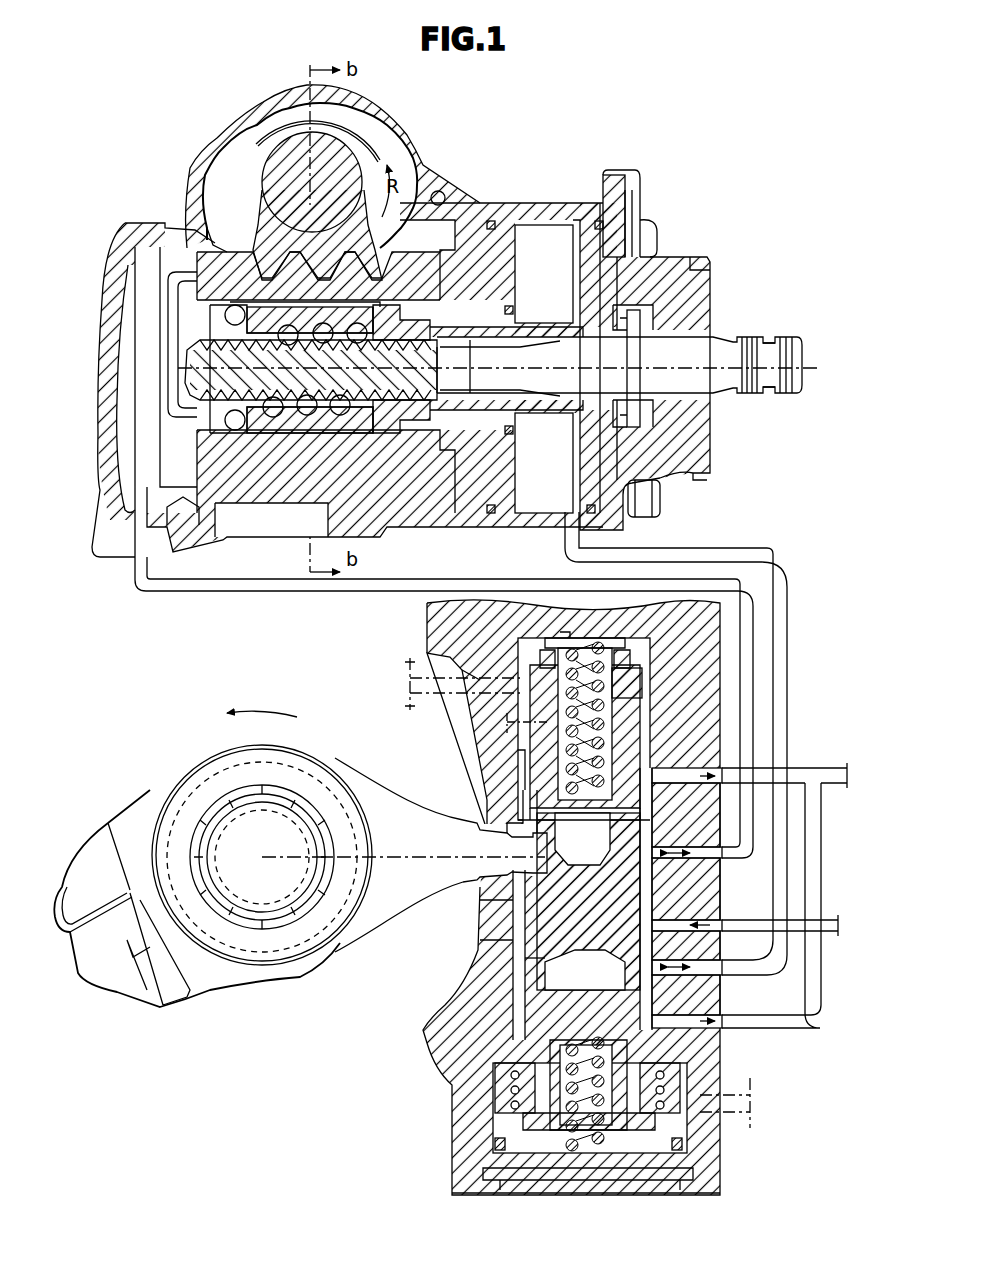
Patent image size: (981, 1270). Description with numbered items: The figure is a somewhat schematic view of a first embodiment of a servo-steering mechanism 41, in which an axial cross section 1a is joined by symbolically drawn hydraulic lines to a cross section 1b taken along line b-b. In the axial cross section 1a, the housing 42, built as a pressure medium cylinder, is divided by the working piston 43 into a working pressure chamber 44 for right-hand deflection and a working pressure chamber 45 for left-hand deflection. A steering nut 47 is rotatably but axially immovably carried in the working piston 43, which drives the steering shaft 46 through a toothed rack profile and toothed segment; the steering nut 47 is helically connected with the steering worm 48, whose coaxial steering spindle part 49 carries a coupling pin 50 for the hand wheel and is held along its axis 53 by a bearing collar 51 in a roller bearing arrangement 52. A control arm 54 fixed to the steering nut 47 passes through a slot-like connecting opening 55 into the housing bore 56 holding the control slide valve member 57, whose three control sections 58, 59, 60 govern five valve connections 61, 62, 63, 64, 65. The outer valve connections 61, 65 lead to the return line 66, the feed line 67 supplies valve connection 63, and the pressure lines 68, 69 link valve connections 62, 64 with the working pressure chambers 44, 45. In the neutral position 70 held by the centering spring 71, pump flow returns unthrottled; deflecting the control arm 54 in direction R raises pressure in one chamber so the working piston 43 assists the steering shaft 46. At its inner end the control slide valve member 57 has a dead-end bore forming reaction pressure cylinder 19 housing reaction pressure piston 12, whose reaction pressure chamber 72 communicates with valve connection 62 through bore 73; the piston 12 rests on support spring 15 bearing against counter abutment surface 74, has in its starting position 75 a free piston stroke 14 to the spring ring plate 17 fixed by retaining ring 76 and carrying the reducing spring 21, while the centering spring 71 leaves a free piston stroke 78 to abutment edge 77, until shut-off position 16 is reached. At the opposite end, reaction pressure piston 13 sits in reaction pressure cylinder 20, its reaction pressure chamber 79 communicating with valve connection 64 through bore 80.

The axial cross section 1a is at (648, 205).
The cross section along line b-b 1b is at (580, 1200).
The reaction pressure piston 12 is at (596, 820).
The reaction pressure piston 13 is at (586, 962).
The free piston stroke 14 is at (408, 690).
The support spring 15 is at (612, 648).
The disconnect or shut-off position 16 is at (498, 668).
The spring ring plate 17 is at (635, 668).
The dead-end bore / reaction pressure cylinder 19 is at (540, 748).
The reaction pressure cylinder 20 is at (655, 1030).
The reducing spring 21 is at (640, 690).
The servo-steering mechanism 41 is at (490, 200).
The housing 42 is at (545, 215).
The working piston 43 is at (225, 450).
The working pressure chamber 44 is at (160, 294).
The working pressure chamber 45 is at (554, 274).
The steering shaft 46 is at (268, 143).
The steering nut 47 is at (295, 440).
The steering worm 48 is at (403, 412).
The steering spindle part 49 is at (698, 348).
The coupling pin 50 is at (765, 393).
The bearing collar 51 is at (637, 335).
The roller bearing arrangement 52 is at (672, 470).
The axis 53 is at (180, 355).
The control arm 54 is at (432, 892).
The slot-like connecting opening 55 is at (493, 887).
The housing bore 56 is at (523, 923).
The control slide valve member 57 is at (632, 1150).
The control section 58 is at (660, 822).
The control section 59 is at (660, 892).
The control section 60 is at (655, 950).
The valve connection 61 is at (685, 768).
The valve connection 62 is at (727, 860).
The valve connection 63 is at (728, 930).
The valve connection 64 is at (728, 976).
The valve connection 65 is at (728, 1028).
The return line 66 is at (841, 775).
The feed line 67 is at (842, 935).
The pressure line 68 is at (240, 598).
The pressure line 69 is at (742, 550).
The neutral position 70 is at (420, 848).
The centering spring 71 is at (515, 1100).
The reaction pressure chamber 72 is at (535, 805).
The bore 73 is at (615, 858).
The counter abutment surface 74 is at (563, 640).
The starting position 75 is at (450, 698).
The retaining ring 76 is at (550, 660).
The abutment edge 77 is at (610, 728).
The free piston stroke 78 is at (505, 723).
The reaction pressure chamber 79 is at (540, 972).
The bore 80 is at (600, 932).